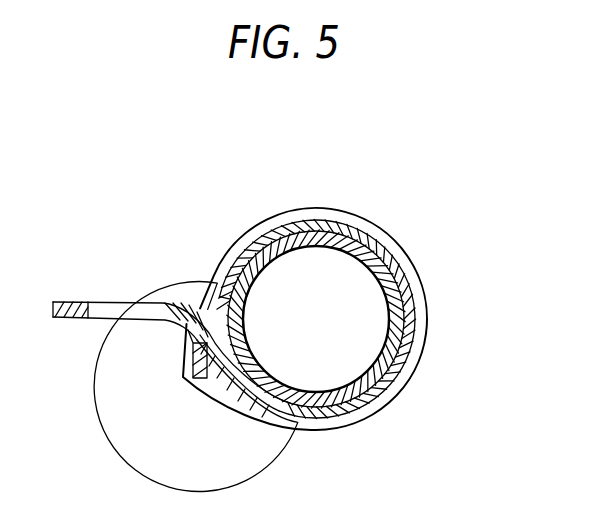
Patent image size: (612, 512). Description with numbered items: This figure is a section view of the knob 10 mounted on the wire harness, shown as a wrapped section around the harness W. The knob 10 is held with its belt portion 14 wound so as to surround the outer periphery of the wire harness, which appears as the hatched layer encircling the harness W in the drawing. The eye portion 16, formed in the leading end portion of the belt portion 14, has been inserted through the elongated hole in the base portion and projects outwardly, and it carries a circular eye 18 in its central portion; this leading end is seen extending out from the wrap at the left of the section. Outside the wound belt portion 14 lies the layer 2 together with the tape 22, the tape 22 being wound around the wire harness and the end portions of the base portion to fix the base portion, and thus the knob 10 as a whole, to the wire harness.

The workpiece (tube/wire) W is at (334, 262).
The covering layer 2 is at (393, 247).
The knob 10 is at (121, 336).
The belt portion 14 is at (420, 303).
The eye portion 16 is at (65, 302).
The circular eye 18 is at (95, 302).
The tape 22 is at (422, 355).